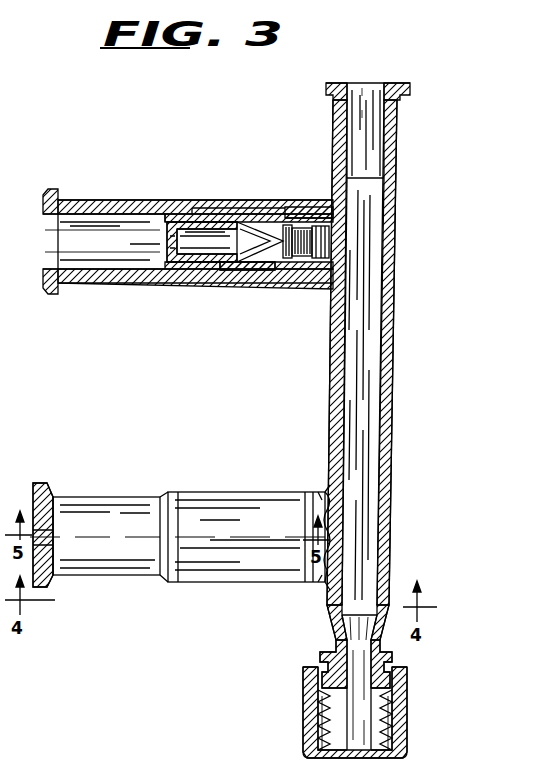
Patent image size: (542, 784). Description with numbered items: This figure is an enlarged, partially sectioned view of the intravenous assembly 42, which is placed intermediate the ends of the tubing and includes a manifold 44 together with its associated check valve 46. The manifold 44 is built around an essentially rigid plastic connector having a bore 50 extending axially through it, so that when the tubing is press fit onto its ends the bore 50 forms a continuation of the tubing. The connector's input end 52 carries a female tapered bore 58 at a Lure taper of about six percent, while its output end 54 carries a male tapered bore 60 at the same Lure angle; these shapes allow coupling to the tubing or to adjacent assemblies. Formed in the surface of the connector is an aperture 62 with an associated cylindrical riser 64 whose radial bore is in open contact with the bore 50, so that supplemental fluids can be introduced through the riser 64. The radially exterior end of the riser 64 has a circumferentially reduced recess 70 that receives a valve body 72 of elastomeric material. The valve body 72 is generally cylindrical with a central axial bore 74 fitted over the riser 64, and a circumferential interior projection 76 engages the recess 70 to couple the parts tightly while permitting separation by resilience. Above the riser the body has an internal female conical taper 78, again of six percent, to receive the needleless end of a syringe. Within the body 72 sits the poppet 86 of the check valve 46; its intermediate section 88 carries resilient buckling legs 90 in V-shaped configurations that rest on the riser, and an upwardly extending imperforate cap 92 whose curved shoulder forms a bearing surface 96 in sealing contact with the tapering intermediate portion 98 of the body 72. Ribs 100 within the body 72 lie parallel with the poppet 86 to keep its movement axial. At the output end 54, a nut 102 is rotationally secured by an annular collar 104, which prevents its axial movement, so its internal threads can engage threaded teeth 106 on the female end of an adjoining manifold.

The intravenous assembly 42 is at (418, 318).
The manifold 44 is at (327, 582).
The check valve 46 is at (170, 203).
The bore 50 is at (365, 452).
The input end 52 is at (370, 83).
The output end 54 is at (365, 748).
The female tapered bore 58 is at (378, 132).
The male tapered bore 60 is at (385, 706).
The aperture 62 is at (350, 240).
The cylindrical riser 64 is at (312, 212).
The circumferentially reduced portion or recess 70 is at (306, 214).
The valve body 72 is at (95, 283).
The central axial bore 74 is at (48, 215).
The circumferential interior projection 76 is at (322, 207).
The internal female conical taper 78 is at (50, 240).
The poppet 86 is at (195, 208).
The intermediate section 88 is at (255, 268).
The resilient buckling legs 90 is at (274, 275).
The imperforate cap 92 is at (200, 288).
The bearing surface 96 is at (178, 280).
The tapering intermediate portion 98 is at (130, 283).
The ribs 100 is at (236, 167).
The nut 102 is at (303, 712).
The annular collar 104 is at (392, 657).
The threaded teeth 106 is at (58, 192).